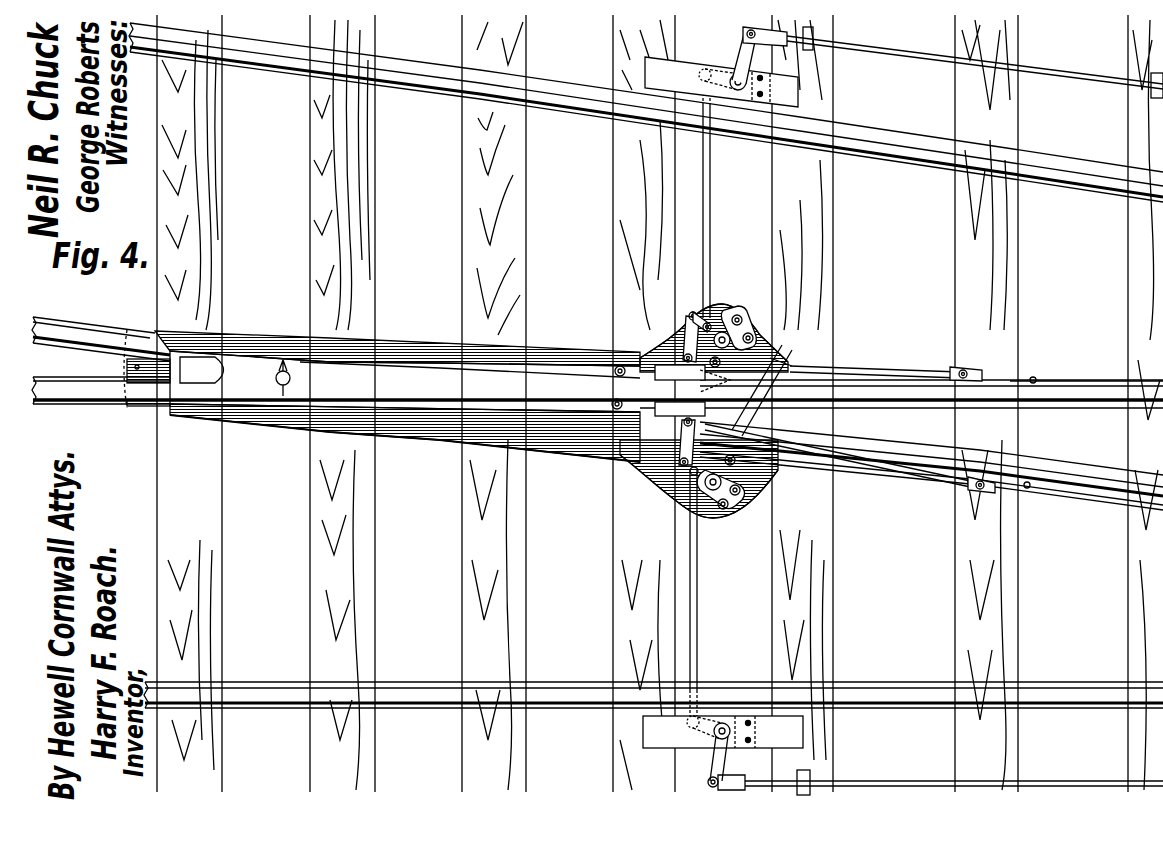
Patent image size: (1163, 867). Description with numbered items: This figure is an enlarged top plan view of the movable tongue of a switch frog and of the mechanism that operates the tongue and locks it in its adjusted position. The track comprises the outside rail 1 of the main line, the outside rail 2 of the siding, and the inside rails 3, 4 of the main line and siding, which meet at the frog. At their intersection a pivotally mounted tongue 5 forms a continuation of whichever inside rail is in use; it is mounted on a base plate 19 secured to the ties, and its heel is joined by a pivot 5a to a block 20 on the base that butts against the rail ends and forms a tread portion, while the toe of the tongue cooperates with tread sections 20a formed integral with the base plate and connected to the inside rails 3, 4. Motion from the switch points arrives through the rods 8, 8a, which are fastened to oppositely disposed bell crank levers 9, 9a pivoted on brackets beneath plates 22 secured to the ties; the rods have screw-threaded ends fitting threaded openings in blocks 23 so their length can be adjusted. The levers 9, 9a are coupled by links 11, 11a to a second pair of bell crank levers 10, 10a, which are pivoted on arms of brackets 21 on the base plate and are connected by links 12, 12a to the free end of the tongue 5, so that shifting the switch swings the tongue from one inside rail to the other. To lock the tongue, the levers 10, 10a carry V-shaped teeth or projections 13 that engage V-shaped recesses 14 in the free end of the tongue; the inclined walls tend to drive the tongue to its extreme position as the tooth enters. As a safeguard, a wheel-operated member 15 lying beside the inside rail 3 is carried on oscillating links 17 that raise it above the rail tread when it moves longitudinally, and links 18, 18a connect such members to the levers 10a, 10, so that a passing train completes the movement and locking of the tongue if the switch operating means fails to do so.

The outside rail of the main track 1 is at (1054, 694).
The outside rail of the side track 2 is at (1088, 176).
The inside rail of the main track 3 is at (1115, 392).
The inside rail of the siding 4 is at (1040, 474).
The movable tongue 5 is at (533, 382).
The pivot 5a is at (283, 368).
The rod 8 is at (915, 780).
The rod 8a is at (933, 58).
The bell crank lever 9 is at (712, 762).
The bell crank lever 9a is at (742, 46).
The bell crank lever 10 is at (766, 480).
The bell crank lever 10a is at (720, 305).
The link 11 is at (694, 612).
The link 11a is at (712, 206).
The link 12 is at (680, 438).
The link 12a is at (684, 322).
The teeth or projections 13 is at (754, 434).
The recesses 14 is at (692, 390).
The wheel-operated member 15 is at (1058, 380).
The links 17 is at (1034, 376).
The link 18 is at (894, 364).
The link 18a is at (893, 478).
The base plate 19 is at (586, 442).
The block 20 is at (212, 375).
The tread sections 20a is at (772, 364).
The brackets 21 is at (758, 318).
The plates 22 is at (723, 402).
The blocks or links 23 is at (790, 44).